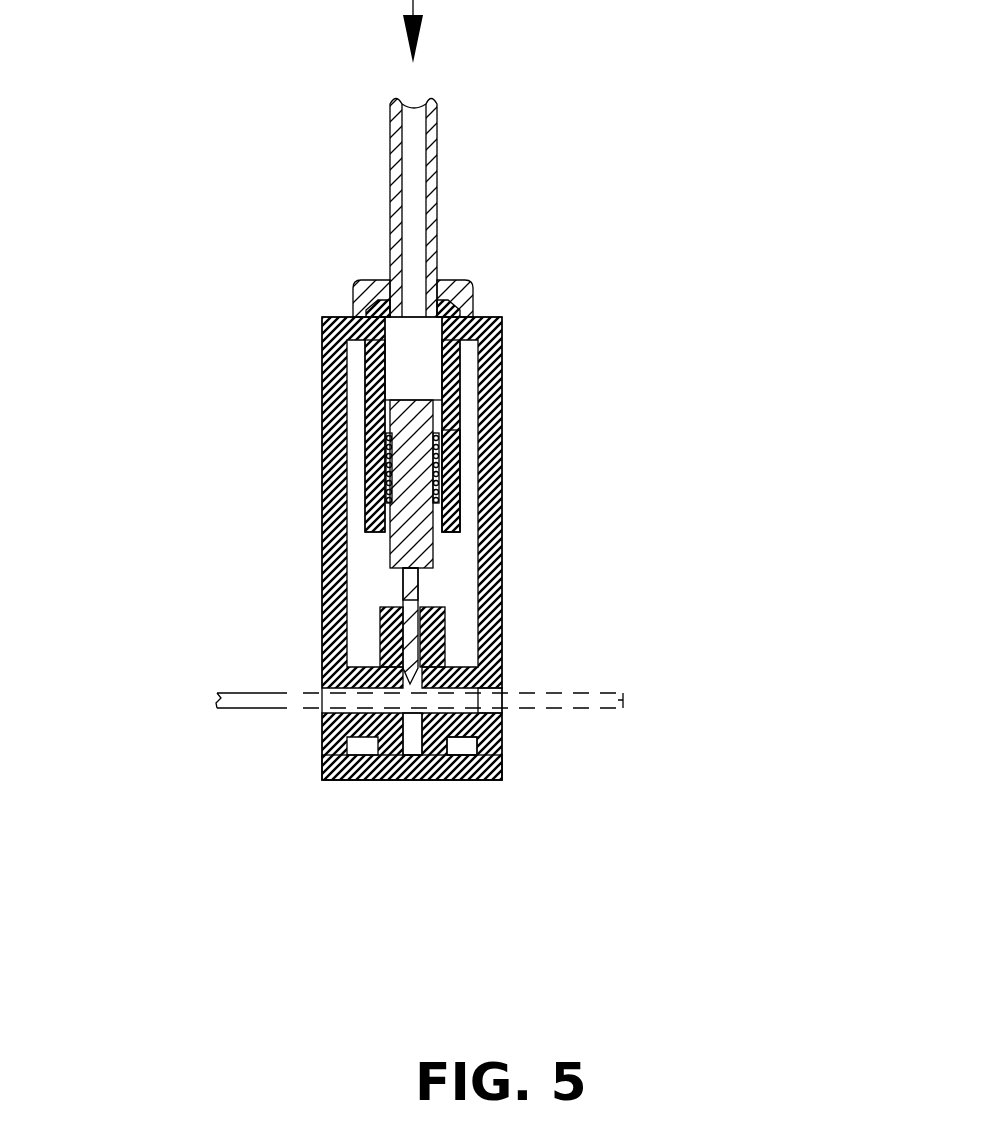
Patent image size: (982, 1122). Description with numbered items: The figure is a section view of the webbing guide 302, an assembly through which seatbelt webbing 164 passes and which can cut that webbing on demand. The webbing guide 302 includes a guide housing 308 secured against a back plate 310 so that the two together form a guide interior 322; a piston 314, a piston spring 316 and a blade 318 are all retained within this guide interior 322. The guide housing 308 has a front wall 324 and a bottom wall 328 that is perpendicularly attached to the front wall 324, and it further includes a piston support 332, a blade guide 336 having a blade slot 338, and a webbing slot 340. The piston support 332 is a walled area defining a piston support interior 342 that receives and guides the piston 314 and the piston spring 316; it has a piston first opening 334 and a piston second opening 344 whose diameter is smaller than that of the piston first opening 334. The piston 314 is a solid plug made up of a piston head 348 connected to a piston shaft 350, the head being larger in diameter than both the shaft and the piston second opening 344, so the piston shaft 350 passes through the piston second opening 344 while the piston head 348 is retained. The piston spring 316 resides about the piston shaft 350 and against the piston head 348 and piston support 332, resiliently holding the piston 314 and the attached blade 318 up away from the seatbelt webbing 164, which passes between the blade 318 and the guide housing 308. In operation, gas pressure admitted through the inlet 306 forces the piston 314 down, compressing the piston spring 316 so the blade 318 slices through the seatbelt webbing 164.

The inlet tube 306 is at (443, 130).
The piston first opening 334 is at (440, 282).
The webbing guide 302 is at (502, 318).
The piston 314 is at (460, 370).
The piston support interior 342 is at (418, 358).
The back plate 310 is at (322, 388).
The piston head 348 is at (436, 418).
The piston support 332 is at (365, 447).
The piston spring 316 is at (450, 447).
The front wall 324 is at (503, 500).
The guide interior 322 is at (340, 569).
The piston second opening 344 is at (434, 538).
The piston shaft 350 is at (434, 560).
The blade 318 is at (400, 592).
The guide housing 308 is at (447, 633).
The blade guide 336 is at (503, 737).
The seatbelt webbing 164 is at (248, 708).
The webbing slot 340 is at (323, 715).
The bottom wall 328 is at (443, 780).
The blade slot 338 is at (418, 780).